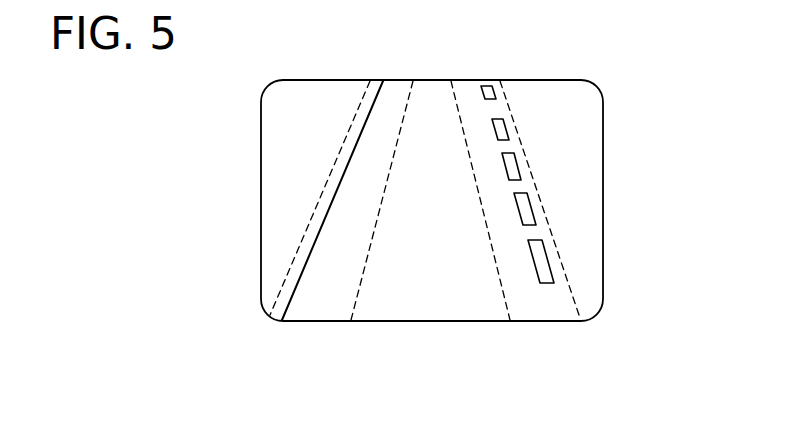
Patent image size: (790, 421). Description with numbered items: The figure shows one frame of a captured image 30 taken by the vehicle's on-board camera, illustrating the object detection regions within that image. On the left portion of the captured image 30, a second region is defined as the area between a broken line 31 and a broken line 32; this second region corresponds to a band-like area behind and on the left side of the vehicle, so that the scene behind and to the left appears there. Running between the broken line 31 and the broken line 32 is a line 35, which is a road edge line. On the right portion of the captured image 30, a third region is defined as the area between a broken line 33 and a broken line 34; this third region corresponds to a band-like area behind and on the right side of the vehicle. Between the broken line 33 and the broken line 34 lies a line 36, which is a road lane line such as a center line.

The captured image 30 is at (603, 128).
The broken line 31 is at (358, 102).
The broken line 32 is at (358, 293).
The broken line 33 is at (548, 220).
The broken line 34 is at (504, 293).
The road edge line 35 is at (377, 93).
The road lane line 36 is at (486, 86).